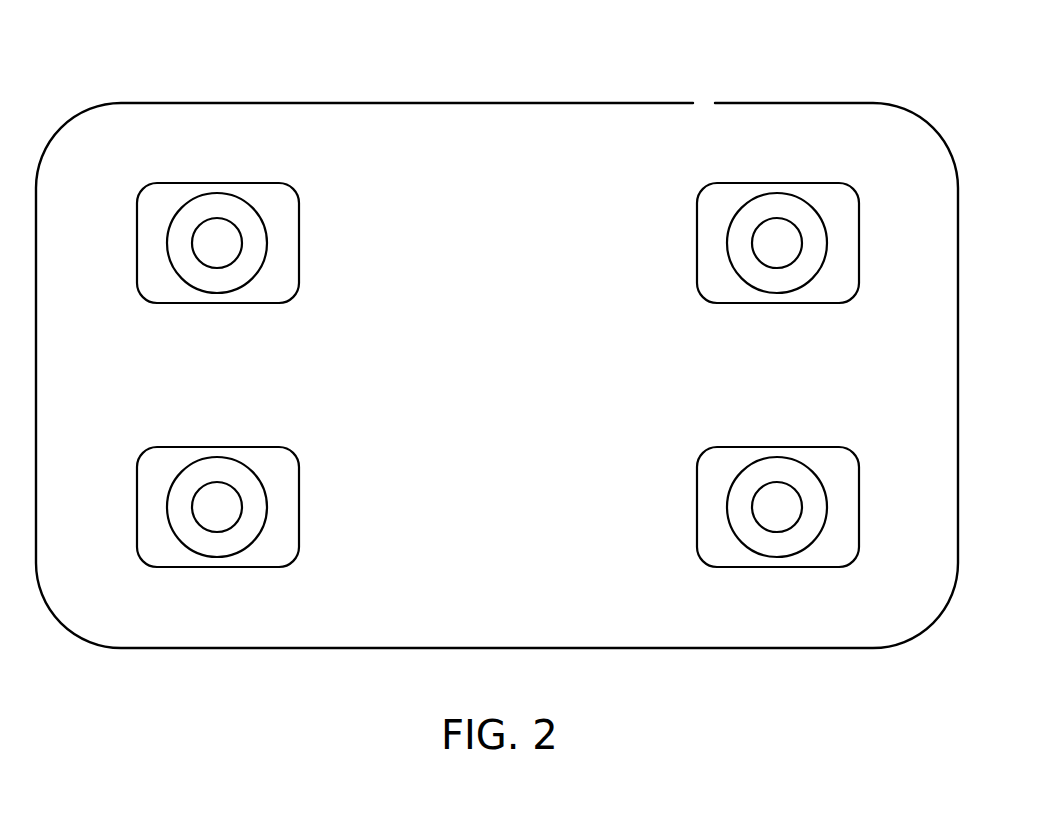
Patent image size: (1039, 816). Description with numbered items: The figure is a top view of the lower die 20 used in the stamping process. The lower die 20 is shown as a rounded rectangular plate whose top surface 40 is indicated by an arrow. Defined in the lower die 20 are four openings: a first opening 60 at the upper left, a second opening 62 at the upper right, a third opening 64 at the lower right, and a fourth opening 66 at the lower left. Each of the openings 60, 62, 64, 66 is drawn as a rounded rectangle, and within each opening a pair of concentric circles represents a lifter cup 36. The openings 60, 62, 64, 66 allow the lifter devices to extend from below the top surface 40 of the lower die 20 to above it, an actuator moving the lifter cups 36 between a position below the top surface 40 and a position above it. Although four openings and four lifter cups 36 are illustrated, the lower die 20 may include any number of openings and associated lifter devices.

The lower die 20 is at (958, 222).
The top surface 40 is at (690, 149).
The lifter cups 36 is at (267, 243).
The first opening 60 is at (137, 243).
The second opening 62 is at (859, 243).
The third opening 64 is at (859, 507).
The fourth opening 66 is at (137, 507).